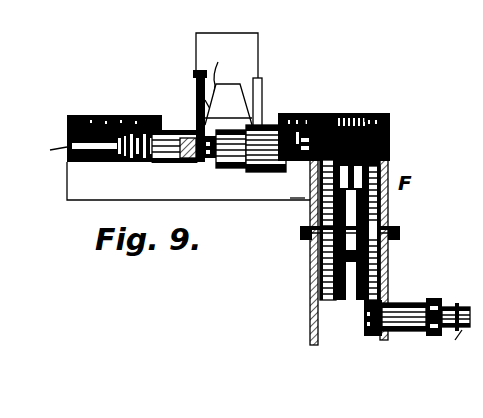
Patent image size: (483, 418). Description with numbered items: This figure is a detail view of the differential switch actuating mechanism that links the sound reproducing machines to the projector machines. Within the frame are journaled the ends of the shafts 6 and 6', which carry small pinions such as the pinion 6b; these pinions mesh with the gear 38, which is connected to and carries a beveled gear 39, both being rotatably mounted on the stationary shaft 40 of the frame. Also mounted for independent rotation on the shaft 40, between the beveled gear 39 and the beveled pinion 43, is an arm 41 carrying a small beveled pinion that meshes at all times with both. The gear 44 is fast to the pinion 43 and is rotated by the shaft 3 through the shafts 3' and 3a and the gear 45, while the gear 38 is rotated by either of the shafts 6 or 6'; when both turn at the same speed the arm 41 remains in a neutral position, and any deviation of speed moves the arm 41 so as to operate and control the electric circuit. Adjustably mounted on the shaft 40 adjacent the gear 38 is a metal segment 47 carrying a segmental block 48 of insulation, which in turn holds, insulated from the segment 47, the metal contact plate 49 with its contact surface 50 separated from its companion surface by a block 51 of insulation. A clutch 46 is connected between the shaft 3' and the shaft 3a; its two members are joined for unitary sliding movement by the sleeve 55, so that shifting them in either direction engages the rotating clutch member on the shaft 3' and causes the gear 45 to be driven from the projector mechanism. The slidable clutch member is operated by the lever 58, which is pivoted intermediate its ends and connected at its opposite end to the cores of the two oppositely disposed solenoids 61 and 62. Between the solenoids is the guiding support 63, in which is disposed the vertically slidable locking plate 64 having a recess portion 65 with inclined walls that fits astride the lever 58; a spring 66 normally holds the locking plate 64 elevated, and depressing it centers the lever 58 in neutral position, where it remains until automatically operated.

The shaft 3 is at (49, 151).
The shaft 3' is at (176, 162).
The shaft 3a is at (310, 113).
The shaft 6 is at (426, 306).
The shaft 6' is at (232, 264).
The small pinion 6b is at (370, 335).
The gear 38 is at (380, 280).
The beveled gear 39 is at (352, 300).
The stationary shaft 40 is at (390, 226).
The arm 41 is at (390, 205).
The beveled pinion 43 is at (300, 199).
The gear 44 is at (306, 178).
The gear 45 is at (335, 113).
The clutch 46 is at (282, 113).
The segment 47 is at (390, 170).
The segmental block of insulation 48 is at (390, 138).
The metal contact plate 49 is at (375, 117).
The contact surface 50 is at (365, 112).
The block of insulation 51 is at (230, 126).
The sleeve 55 is at (258, 170).
The lever 58 is at (196, 122).
The solenoid 61 is at (88, 115).
The solenoid 62 is at (355, 106).
The guiding support 63 is at (260, 100).
The locking plate 64 is at (196, 40).
The recess portion 65 is at (218, 77).
The spring 66 is at (196, 100).